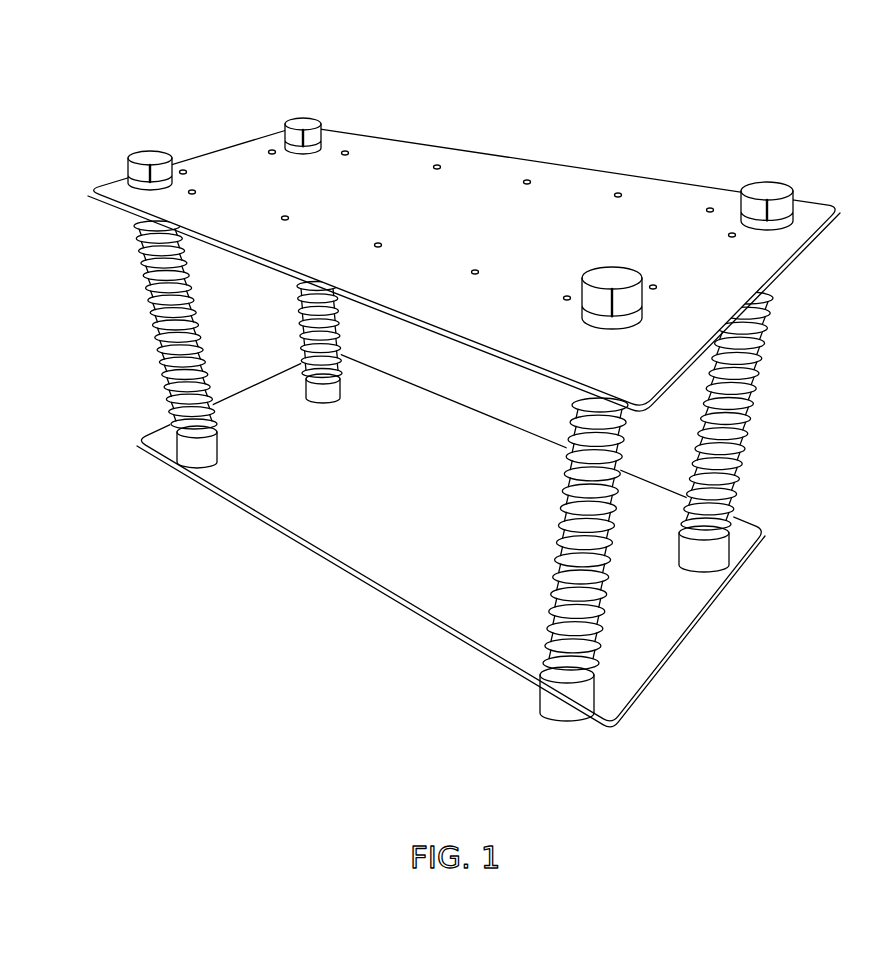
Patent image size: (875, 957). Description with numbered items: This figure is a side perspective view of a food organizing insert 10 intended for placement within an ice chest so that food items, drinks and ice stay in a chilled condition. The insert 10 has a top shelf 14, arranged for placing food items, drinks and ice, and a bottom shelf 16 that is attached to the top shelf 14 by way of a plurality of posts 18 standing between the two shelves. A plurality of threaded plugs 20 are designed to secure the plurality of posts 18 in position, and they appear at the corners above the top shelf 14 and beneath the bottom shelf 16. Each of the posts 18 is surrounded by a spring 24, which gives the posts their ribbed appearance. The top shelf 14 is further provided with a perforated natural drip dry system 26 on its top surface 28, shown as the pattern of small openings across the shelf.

The food organizing insert 10 is at (456, 402).
The top shelf 14 is at (646, 172).
The bottom shelf 16 is at (648, 677).
The posts 18 is at (168, 340).
The threaded plugs 20 is at (142, 146).
The spring 24 is at (153, 296).
The perforated natural drip dry system 26 is at (347, 145).
The top surface 28 is at (497, 175).